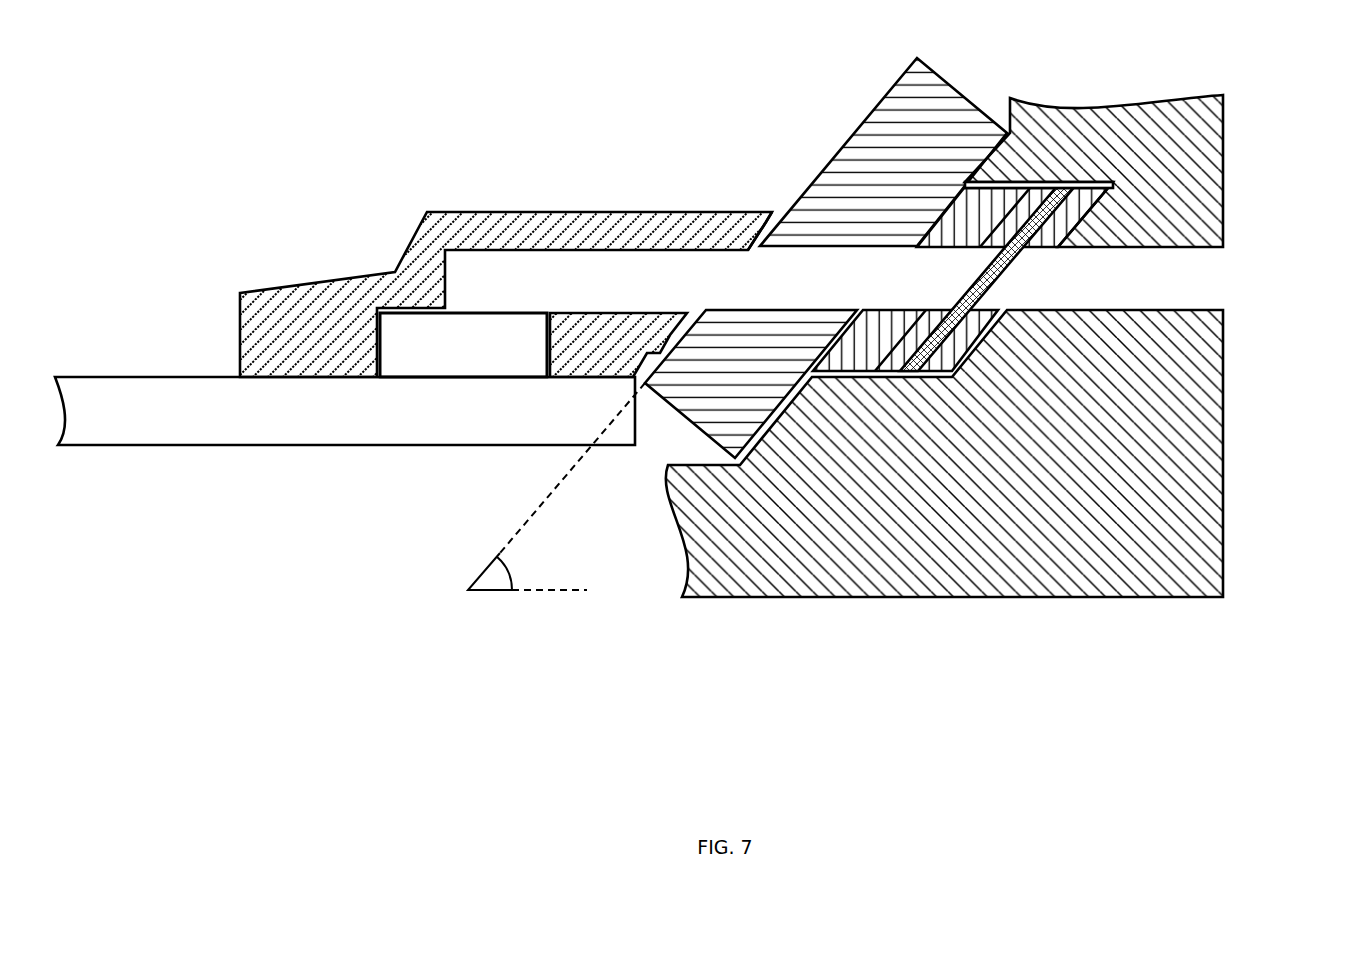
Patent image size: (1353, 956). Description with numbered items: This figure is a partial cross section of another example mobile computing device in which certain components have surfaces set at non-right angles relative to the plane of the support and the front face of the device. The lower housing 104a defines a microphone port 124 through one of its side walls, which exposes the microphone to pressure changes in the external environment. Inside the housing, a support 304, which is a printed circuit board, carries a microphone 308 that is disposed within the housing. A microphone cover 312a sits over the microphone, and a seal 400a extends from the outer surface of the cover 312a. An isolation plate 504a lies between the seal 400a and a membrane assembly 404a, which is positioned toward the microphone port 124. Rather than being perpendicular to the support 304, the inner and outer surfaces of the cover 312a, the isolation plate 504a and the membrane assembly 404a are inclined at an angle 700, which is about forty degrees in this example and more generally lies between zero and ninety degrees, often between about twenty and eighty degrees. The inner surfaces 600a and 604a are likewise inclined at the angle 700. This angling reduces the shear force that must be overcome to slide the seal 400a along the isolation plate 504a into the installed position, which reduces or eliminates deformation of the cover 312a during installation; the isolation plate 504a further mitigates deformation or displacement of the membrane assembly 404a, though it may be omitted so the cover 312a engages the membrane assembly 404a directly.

The housing 104a is at (1123, 597).
The microphone port 124 is at (1222, 265).
The support 304 is at (345, 411).
The microphone 308 is at (463, 345).
The microphone cover 312a is at (447, 212).
The seal 400a is at (758, 212).
The membrane assembly 404a is at (1030, 178).
The isolation plate 504a is at (900, 138).
The inner surface 600a is at (1082, 222).
The inner surface 604a is at (1008, 140).
The angle 700 is at (556, 486).